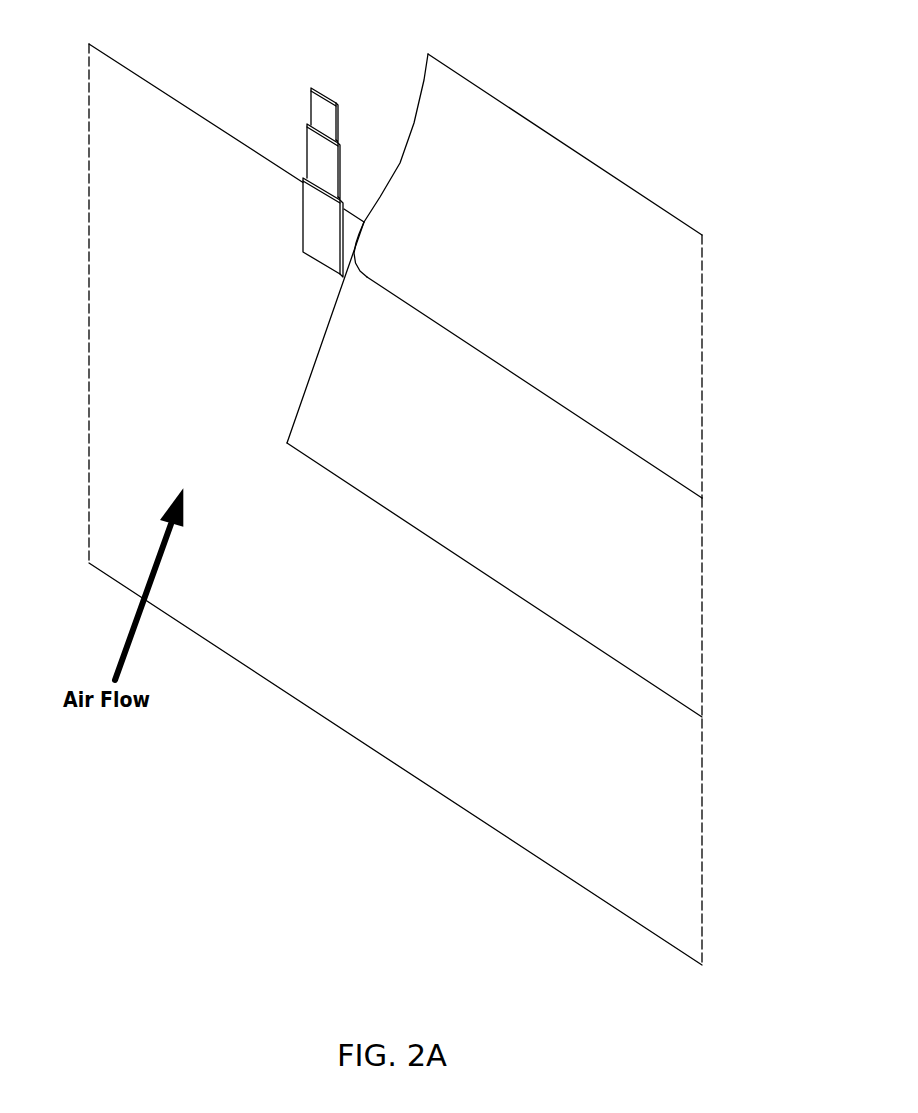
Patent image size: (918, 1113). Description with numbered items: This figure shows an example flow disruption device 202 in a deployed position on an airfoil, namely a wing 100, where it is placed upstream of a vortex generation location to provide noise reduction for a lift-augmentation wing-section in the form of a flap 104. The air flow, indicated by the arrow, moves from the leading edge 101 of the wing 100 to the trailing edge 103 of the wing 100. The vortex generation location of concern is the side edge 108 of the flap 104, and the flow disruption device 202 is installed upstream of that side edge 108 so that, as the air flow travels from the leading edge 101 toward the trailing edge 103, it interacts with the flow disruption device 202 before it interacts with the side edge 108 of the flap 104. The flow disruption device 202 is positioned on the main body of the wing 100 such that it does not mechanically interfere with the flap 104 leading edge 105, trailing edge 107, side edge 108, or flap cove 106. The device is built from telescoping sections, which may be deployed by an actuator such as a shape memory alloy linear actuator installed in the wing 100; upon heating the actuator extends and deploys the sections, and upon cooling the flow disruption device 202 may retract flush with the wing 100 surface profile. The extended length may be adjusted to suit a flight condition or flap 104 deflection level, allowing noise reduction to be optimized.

The wing 100 is at (426, 504).
The leading edge 101 is at (395, 764).
The trailing edge 103 is at (166, 88).
The flap 104 is at (561, 276).
The flap leading edge 105 is at (467, 344).
The flap cove 106 is at (525, 580).
The flap trailing edge 107 is at (563, 141).
The side edge 108 is at (413, 153).
The flow disruption device 202 is at (258, 182).